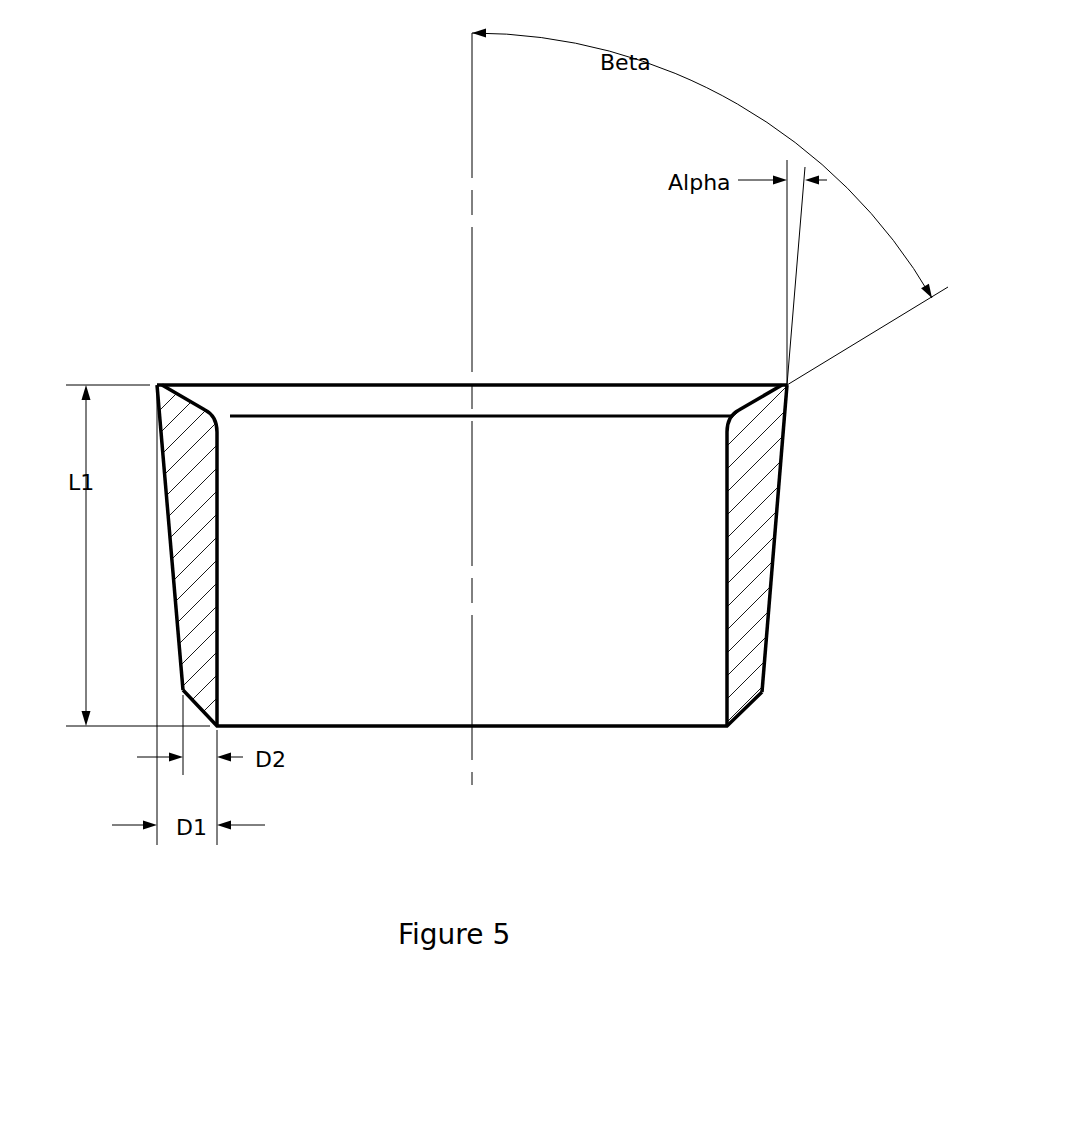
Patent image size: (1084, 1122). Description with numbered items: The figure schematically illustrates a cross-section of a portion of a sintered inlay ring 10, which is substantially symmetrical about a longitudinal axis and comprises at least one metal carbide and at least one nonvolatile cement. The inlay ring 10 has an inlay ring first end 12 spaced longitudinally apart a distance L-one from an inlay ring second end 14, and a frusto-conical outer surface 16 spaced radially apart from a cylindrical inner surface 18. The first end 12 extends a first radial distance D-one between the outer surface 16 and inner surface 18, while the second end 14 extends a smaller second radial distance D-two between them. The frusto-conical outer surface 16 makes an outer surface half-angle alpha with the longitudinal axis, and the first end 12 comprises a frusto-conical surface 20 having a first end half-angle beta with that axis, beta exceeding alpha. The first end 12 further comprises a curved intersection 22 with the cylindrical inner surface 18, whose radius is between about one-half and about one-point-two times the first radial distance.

The inlay ring 10 is at (767, 457).
The inlay ring first end 12 is at (160, 385).
The inlay ring second end 14 is at (727, 726).
The frusto-conical outer surface 16 is at (771, 581).
The cylindrical inner surface 18 is at (219, 552).
The frusto-conical surface 20 is at (212, 408).
The curved intersection 22 is at (233, 416).